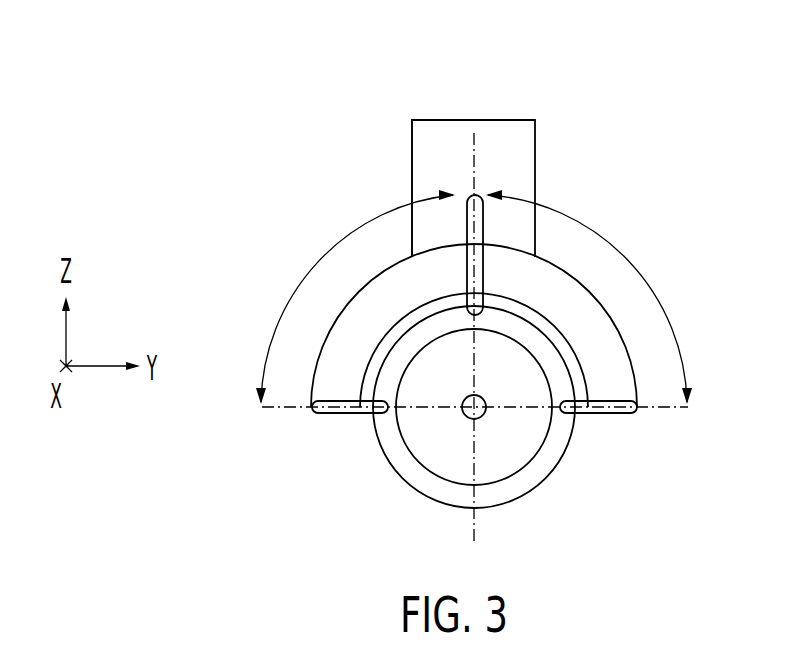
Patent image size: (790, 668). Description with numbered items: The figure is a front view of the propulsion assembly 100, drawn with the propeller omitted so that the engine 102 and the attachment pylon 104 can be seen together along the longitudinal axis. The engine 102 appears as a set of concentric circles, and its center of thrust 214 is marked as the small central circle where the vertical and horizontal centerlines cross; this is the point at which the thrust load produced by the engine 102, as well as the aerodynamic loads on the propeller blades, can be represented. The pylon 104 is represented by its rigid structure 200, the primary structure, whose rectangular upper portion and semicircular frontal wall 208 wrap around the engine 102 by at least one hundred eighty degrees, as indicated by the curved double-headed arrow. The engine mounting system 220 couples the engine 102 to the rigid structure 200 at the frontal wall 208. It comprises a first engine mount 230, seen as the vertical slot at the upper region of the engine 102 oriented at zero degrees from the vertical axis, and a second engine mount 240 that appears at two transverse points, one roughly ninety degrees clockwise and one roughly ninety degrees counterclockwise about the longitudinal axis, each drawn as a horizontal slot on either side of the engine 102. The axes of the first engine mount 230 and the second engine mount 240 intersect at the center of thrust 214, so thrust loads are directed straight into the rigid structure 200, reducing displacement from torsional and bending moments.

The propulsion assembly 100 is at (325, 101).
The engine 102 is at (540, 511).
The attachment pylon 104 is at (411, 91).
The rigid structure 200 is at (412, 153).
The frontal wall 208 is at (390, 297).
The center of thrust 214 is at (473, 419).
The engine mounting system 220 is at (218, 236).
The first engine mount 230 is at (467, 273).
The second engine mount 240 is at (582, 414).